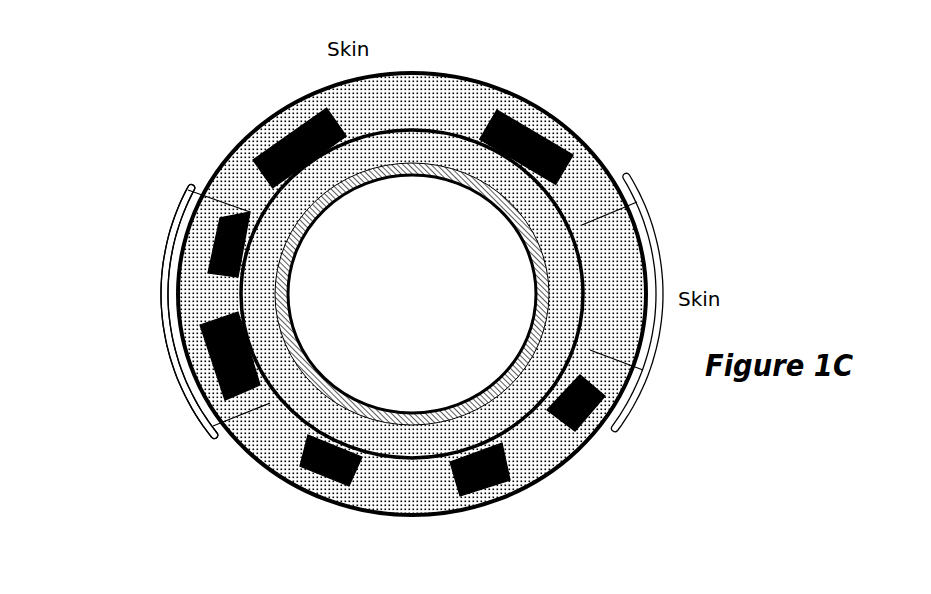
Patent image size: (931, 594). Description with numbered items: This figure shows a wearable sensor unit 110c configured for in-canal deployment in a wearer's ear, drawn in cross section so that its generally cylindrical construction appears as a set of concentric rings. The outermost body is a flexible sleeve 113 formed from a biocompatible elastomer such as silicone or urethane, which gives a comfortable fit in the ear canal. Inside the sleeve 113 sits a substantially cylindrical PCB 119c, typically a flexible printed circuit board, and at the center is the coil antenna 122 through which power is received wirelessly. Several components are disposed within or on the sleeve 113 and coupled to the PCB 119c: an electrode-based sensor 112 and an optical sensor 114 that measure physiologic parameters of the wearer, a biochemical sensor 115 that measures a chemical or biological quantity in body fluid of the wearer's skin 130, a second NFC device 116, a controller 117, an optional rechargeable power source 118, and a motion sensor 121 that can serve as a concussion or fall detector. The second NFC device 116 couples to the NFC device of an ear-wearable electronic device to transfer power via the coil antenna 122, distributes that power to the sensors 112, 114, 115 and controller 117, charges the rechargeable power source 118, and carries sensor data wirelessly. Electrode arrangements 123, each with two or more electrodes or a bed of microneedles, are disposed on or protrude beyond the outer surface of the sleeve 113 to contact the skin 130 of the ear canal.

The wearable sensor unit 110c is at (636, 100).
The electrode-based sensor 112 is at (585, 424).
The flexible sleeve 113 is at (233, 168).
The optical sensor 114 is at (495, 481).
The biochemical sensor 115 is at (293, 128).
The second NFC device 116 is at (550, 128).
The controller 117 is at (212, 225).
The rechargeable power source 118 is at (192, 362).
The PCB 119c is at (402, 128).
The motion sensor 121 is at (318, 477).
The coil antenna 122 is at (293, 245).
The electrode arrangement 123 is at (162, 322).
The skin 130 is at (122, 377).